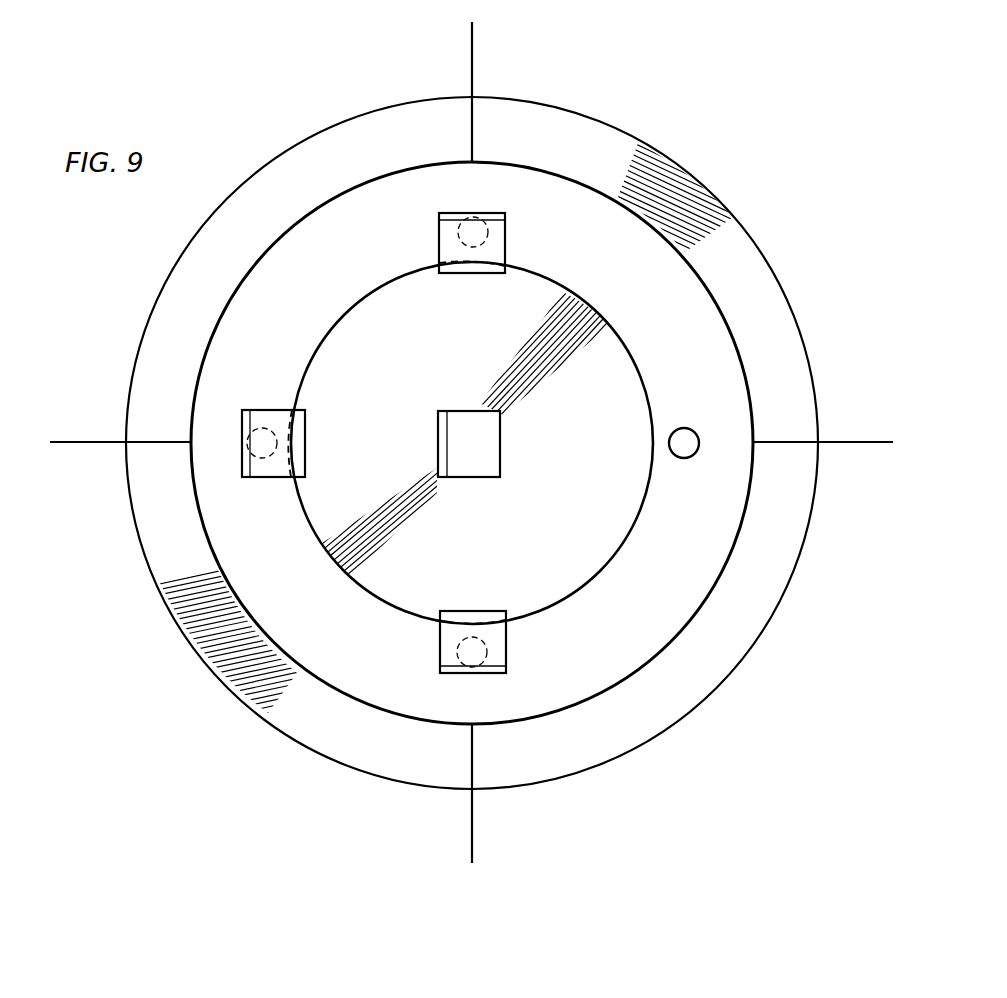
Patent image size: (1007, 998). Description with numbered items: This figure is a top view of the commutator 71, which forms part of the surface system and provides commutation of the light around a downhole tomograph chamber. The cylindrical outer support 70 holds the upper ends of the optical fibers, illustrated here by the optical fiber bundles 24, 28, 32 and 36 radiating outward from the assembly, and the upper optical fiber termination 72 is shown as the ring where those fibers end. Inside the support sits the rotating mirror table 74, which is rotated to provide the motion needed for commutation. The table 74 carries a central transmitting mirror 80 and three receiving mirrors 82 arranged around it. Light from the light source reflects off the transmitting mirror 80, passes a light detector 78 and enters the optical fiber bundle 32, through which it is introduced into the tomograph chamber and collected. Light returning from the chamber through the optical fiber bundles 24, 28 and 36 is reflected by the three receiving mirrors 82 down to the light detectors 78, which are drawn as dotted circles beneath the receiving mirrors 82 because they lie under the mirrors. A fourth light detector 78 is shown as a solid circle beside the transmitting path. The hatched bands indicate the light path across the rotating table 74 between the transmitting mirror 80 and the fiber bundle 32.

The commutator 71 is at (370, 90).
The cylindrical outer support 70 is at (600, 128).
The upper optical fiber termination 72 is at (194, 441).
The rotating mirror table 74 is at (588, 457).
The optical fiber bundle 36 is at (473, 52).
The optical fiber bundle 24 is at (80, 440).
The optical fiber bundle 32 is at (880, 444).
The optical fiber bundle 28 is at (471, 832).
The transmitting mirror 80 is at (462, 410).
The light detector 78 is at (456, 232).
The receiving mirror 82 is at (478, 274).